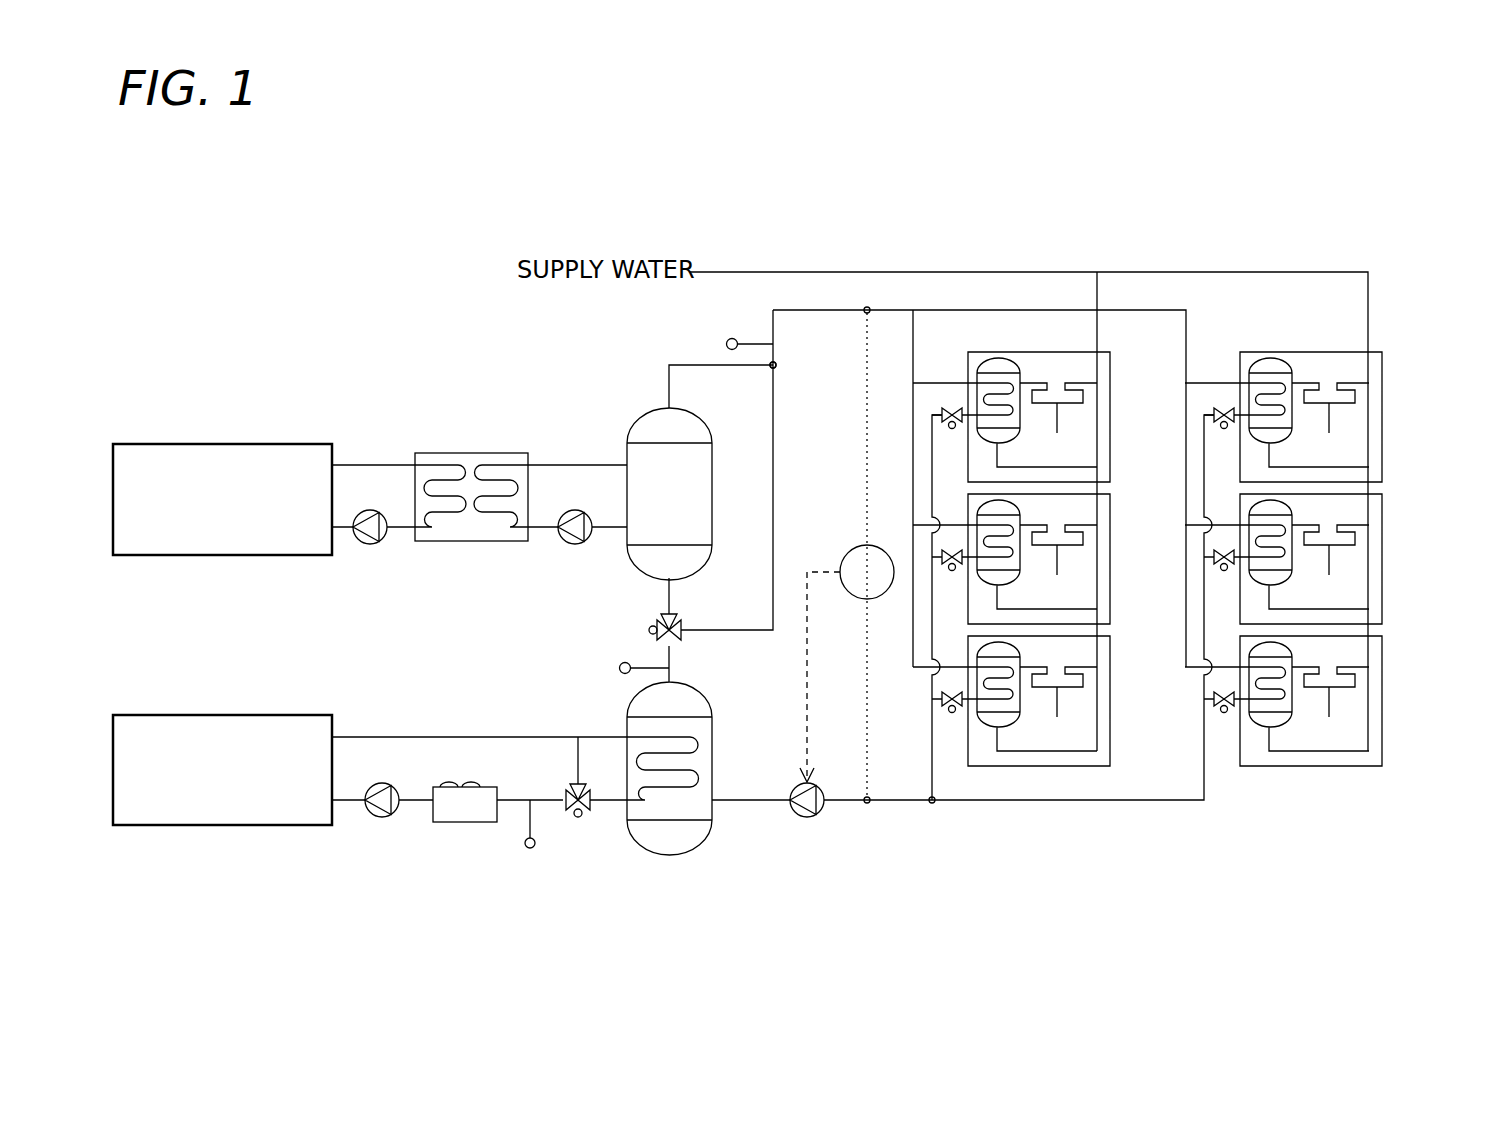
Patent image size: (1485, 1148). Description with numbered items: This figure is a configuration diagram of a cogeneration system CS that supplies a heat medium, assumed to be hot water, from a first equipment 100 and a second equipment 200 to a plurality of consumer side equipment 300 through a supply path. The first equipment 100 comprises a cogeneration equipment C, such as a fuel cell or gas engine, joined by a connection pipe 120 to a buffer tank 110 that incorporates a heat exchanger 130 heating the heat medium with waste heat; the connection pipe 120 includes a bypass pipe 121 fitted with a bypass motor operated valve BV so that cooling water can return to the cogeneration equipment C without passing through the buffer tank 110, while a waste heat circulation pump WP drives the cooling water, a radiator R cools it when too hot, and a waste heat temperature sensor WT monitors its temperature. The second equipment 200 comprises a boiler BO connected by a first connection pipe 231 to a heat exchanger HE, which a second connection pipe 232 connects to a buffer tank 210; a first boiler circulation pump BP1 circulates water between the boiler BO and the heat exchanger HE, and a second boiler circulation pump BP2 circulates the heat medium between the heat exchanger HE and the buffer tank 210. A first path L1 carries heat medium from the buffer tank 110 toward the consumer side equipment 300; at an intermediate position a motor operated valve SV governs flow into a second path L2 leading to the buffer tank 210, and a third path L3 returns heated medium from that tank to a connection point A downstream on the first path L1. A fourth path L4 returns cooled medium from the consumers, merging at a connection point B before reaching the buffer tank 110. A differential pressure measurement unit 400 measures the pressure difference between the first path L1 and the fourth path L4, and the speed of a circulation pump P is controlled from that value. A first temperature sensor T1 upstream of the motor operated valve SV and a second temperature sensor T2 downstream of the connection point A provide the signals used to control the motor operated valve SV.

The boiler BO is at (245, 444).
The cogeneration equipment C is at (243, 715).
The first equipment 100 is at (447, 716).
The second equipment 200 is at (497, 390).
The first connection pipe 231 is at (362, 463).
The second connection pipe 232 is at (568, 465).
The heat exchanger HE is at (468, 453).
The first boiler circulation pump BP1 is at (373, 545).
The second boiler circulation pump BP2 is at (573, 545).
The buffer tank 210 is at (640, 420).
The first path L1 is at (817, 308).
The second path L2 is at (667, 607).
The third path L3 is at (668, 390).
The fourth path L4 is at (872, 805).
The motor operated valve SV is at (683, 623).
The first temperature sensor T1 is at (618, 664).
The second temperature sensor T2 is at (727, 340).
The connection point A is at (774, 368).
The connection point B is at (935, 806).
The differential pressure measurement unit 400 is at (850, 550).
The buffer tank 110 is at (698, 843).
The heat exchanger 130 is at (697, 767).
The connection pipe 120 is at (363, 737).
The bypass pipe 121 is at (588, 742).
The waste heat circulation pump WP is at (383, 818).
The radiator R is at (465, 822).
The waste heat temperature sensor WT is at (533, 850).
The bypass motor operated valve BV is at (580, 818).
The circulation pump P is at (807, 820).
The consumer side equipment 300 is at (1035, 345).
The cogeneration system CS is at (1210, 212).